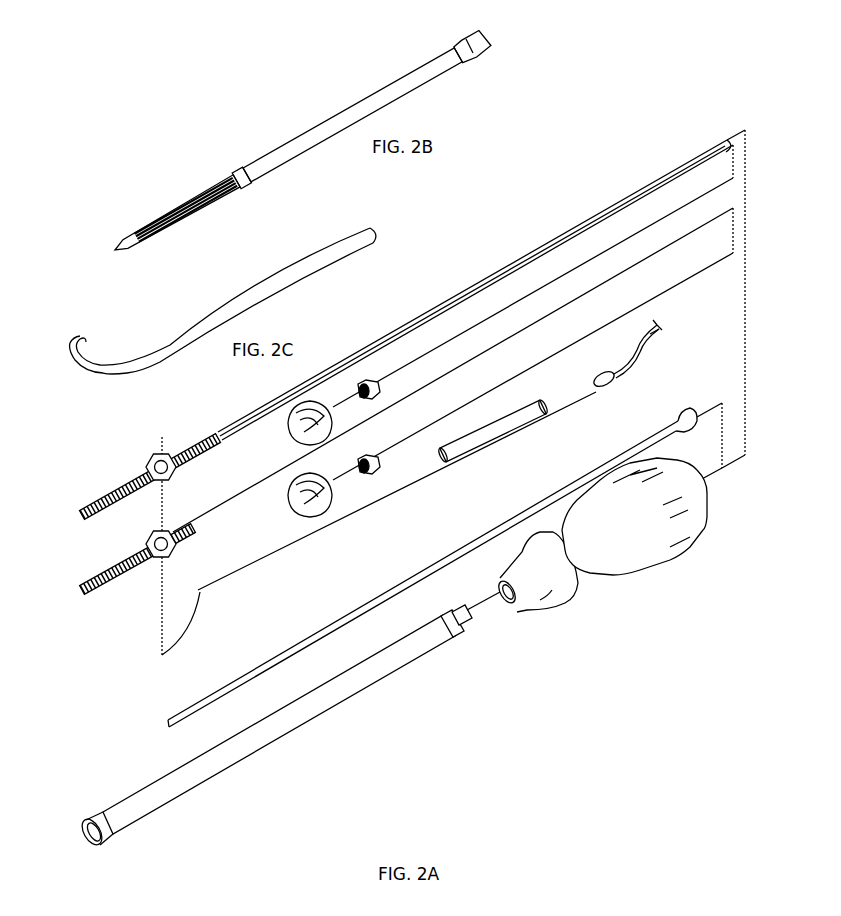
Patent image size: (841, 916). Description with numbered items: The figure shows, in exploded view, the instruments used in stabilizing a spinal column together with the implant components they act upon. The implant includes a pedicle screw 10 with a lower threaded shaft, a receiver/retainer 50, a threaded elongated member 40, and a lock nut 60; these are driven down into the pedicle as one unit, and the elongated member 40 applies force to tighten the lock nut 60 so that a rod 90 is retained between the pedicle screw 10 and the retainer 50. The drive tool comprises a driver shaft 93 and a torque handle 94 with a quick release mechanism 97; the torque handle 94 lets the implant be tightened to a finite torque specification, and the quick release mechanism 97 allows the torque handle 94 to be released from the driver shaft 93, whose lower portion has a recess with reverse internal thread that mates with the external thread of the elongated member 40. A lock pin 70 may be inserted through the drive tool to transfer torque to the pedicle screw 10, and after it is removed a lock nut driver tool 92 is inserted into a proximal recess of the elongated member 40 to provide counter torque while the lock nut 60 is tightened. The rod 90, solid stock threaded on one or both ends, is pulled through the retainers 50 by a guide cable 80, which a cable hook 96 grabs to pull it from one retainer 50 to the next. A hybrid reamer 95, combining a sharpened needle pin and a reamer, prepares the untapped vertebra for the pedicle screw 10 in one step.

In FIG. 2A, the pedicle screw 10 is at (103, 483).
In FIG. 2A, the threaded elongated member 40 is at (193, 463).
In FIG. 2A, the receiver/retainer 50 is at (295, 512).
In FIG. 2A, the lock nut 60 is at (372, 382).
In FIG. 2A, the lock pin 70 is at (452, 563).
In FIG. 2A, the guide cable 80 is at (658, 332).
In FIG. 2A, the rod 90 is at (546, 426).
In FIG. 2A, the lock nut driver tool 92 is at (649, 182).
In FIG. 2A, the driver shaft 93 is at (468, 632).
In FIG. 2A, the torque handle 94 is at (660, 563).
In FIG. 2B, the hybrid reamer 95 is at (195, 192).
In FIG. 2C, the cable hook 96 is at (170, 338).
In FIG. 2A, the quick release mechanism 97 is at (578, 604).